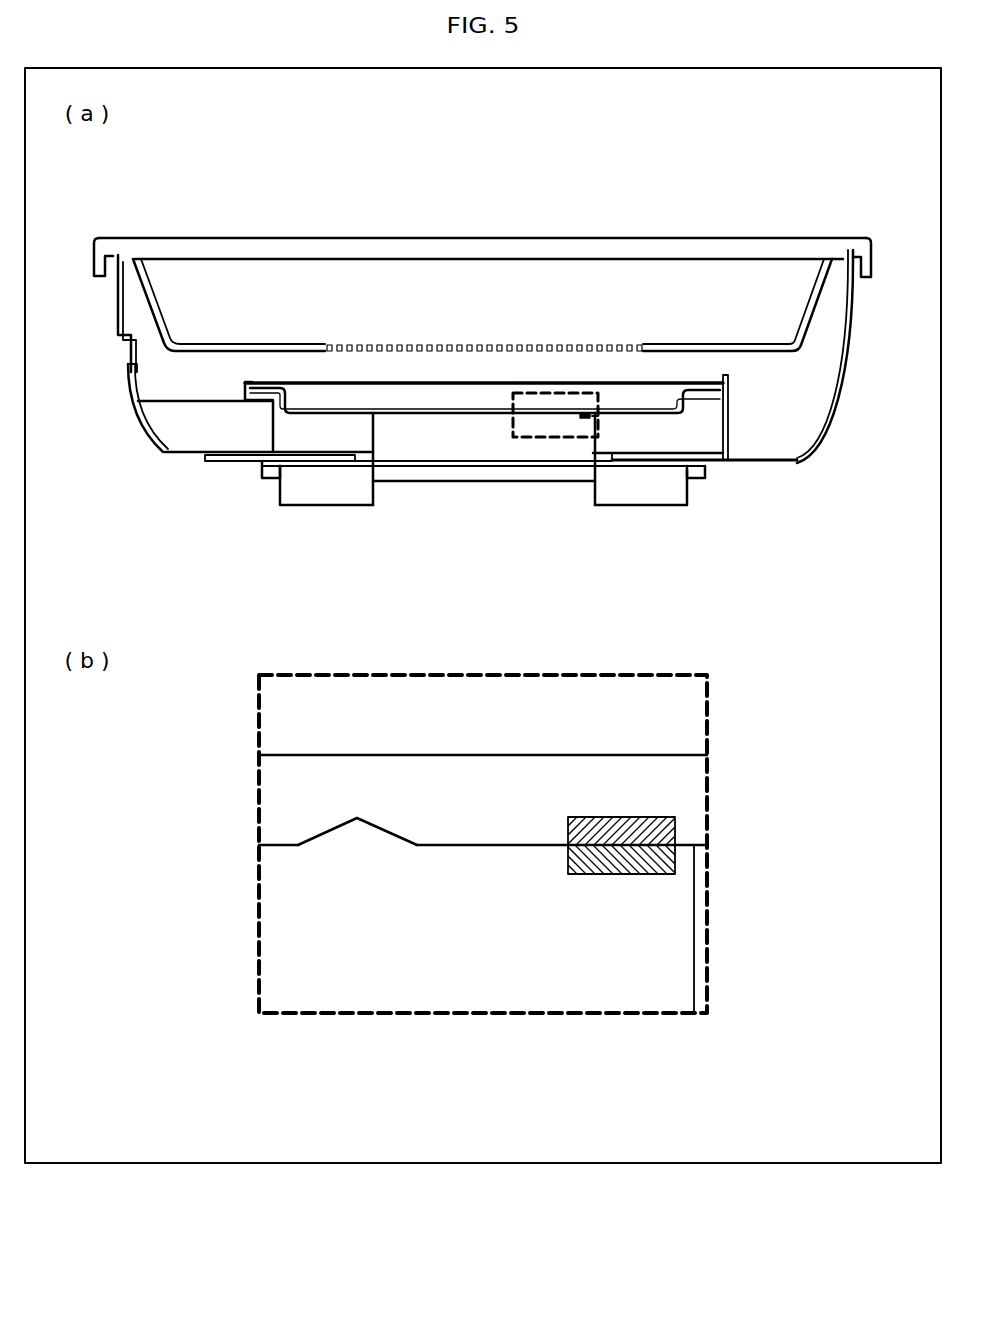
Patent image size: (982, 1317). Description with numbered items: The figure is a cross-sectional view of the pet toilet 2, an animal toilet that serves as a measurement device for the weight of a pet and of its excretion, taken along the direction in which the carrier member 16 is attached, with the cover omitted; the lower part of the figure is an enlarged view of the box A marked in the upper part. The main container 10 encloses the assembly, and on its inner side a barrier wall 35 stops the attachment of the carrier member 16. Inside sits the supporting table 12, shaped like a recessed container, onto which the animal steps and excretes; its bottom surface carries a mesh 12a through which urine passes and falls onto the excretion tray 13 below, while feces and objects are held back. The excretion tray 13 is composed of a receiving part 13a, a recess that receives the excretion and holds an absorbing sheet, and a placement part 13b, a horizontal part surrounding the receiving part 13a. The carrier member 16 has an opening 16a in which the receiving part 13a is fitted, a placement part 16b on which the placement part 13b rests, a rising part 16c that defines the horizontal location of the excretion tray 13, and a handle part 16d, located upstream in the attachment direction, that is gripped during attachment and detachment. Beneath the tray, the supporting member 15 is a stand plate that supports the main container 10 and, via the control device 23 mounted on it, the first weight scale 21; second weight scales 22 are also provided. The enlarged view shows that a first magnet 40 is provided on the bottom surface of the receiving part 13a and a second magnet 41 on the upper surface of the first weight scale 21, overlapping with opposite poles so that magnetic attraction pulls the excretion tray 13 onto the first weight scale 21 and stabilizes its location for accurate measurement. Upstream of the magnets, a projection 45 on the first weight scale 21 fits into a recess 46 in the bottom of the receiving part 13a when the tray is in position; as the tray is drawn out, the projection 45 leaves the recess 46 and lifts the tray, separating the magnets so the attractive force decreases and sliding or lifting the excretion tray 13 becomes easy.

The pet toilet 2 is at (810, 166).
The main container 10 is at (848, 338).
The supporting table 12 is at (830, 292).
The mesh 12a is at (453, 343).
The excretion tray 13 is at (502, 383).
The receiving part 13a is at (418, 402).
The placement part 13b is at (705, 383).
The supporting member 15 is at (497, 473).
The carrier member 16 is at (133, 417).
The opening 16a is at (280, 422).
The placement part 16b is at (262, 400).
The rising part 16c is at (245, 382).
The handle part 16d is at (127, 378).
The first weight scale 21 is at (457, 447).
The second weight scale 22 is at (641, 490).
The control device 23 is at (550, 467).
The barrier wall 35 is at (733, 417).
The first magnet 40 is at (584, 413).
The second magnet 41 is at (595, 420).
The projection 45 is at (360, 835).
The recess 46 is at (377, 825).
The box A is at (533, 440).